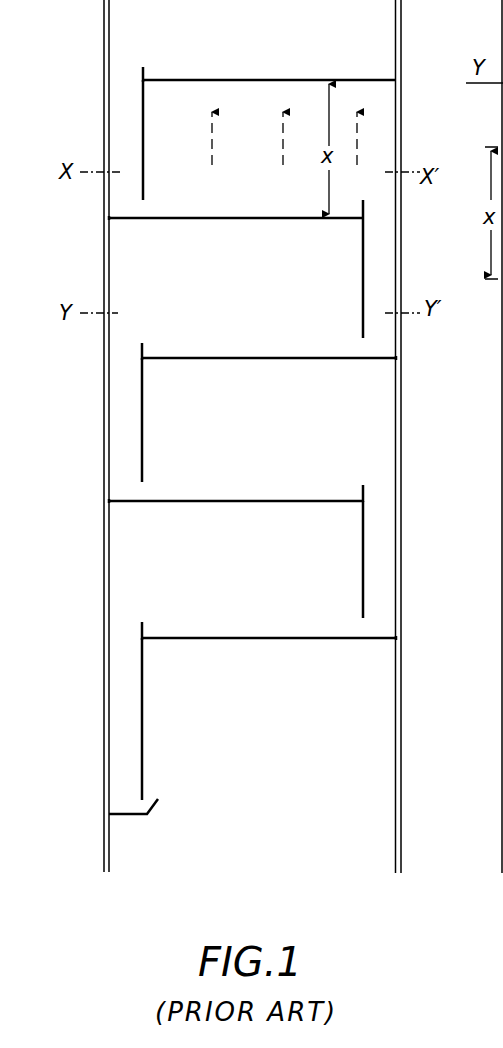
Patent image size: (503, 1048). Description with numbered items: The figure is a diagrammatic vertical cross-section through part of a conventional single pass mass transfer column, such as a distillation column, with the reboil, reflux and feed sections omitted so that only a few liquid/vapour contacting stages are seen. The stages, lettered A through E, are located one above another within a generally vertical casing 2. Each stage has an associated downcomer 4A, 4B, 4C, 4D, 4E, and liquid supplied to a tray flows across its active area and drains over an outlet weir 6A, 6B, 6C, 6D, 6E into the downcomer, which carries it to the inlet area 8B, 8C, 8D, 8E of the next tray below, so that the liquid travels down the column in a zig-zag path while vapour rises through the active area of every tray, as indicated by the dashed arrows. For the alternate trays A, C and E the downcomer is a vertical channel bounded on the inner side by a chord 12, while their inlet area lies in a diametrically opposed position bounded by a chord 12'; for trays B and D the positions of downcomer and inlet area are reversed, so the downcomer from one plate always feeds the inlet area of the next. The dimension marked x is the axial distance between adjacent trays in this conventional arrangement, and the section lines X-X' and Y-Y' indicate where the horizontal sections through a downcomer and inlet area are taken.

The casing 2 is at (402, 415).
The downcomer 4A is at (138, 129).
The downcomer 4B is at (392, 261).
The downcomer 4C is at (138, 428).
The downcomer 4D is at (393, 541).
The downcomer 4E is at (138, 708).
The outlet weir 6A is at (145, 70).
The outlet weir 6B is at (363, 209).
The outlet weir 6C is at (144, 346).
The outlet weir 6D is at (362, 491).
The outlet weir 6E is at (144, 626).
The inlet area 8B is at (125, 214).
The inlet area 8C is at (378, 351).
The inlet area 8D is at (123, 491).
The inlet area 8E is at (376, 634).
The chord 12 is at (170, 440).
The chord 12' is at (337, 418).